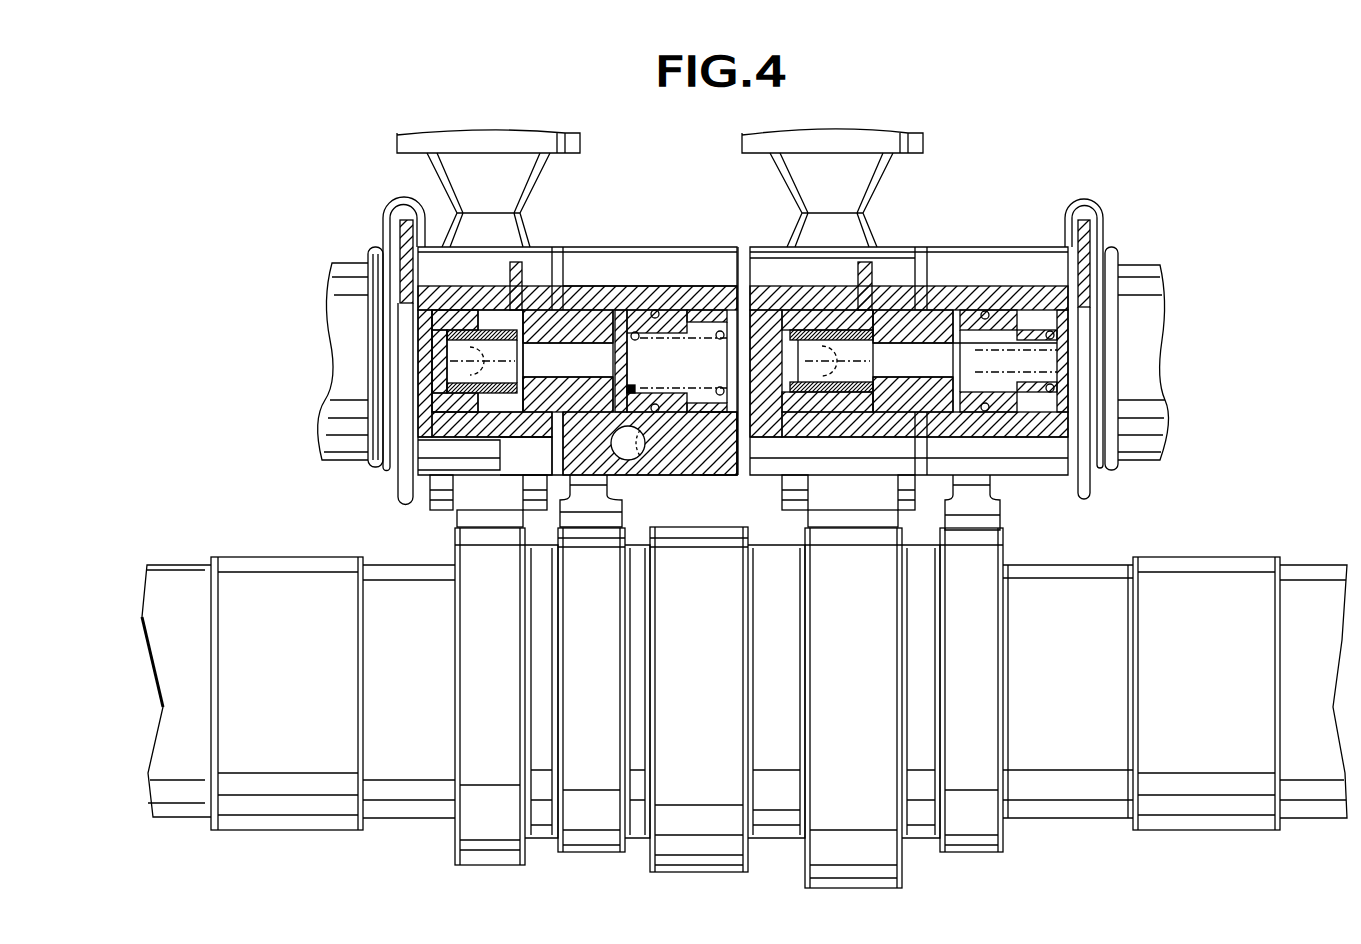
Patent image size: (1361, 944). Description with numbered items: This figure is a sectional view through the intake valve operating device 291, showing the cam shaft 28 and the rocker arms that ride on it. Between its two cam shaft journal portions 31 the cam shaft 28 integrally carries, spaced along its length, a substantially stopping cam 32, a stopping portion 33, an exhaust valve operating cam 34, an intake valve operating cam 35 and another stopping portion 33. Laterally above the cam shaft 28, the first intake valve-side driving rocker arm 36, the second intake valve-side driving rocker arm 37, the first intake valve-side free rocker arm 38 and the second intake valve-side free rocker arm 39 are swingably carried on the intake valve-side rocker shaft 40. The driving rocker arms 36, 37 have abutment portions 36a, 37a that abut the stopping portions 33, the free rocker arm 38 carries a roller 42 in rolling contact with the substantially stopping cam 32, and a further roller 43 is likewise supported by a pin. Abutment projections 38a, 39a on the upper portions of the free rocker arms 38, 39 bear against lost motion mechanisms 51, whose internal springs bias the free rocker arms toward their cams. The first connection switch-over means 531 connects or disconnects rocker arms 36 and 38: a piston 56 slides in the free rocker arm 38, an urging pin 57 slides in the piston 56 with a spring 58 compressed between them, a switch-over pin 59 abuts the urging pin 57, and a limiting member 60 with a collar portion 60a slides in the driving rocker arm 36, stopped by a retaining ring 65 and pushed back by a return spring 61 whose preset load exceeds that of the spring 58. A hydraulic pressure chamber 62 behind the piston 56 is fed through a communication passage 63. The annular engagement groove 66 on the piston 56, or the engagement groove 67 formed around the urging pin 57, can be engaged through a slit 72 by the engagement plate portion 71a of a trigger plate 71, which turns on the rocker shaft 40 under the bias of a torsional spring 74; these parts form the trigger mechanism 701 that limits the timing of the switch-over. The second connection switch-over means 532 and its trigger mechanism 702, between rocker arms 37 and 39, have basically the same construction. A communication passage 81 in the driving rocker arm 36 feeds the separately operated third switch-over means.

The trigger mechanism 701 is at (465, 218).
The trigger mechanism 702 is at (1110, 226).
The lost motion mechanism 51 is at (586, 140).
The abutment projection 38a is at (460, 217).
The abutment projection 39a is at (857, 233).
The slit 72 is at (502, 264).
The first intake valve-side driving rocker arm 36 is at (630, 257).
The second intake valve-side free rocker arm 39 is at (780, 257).
The limiting member 60 is at (600, 320).
The collar portion 60a is at (645, 323).
The intake valve operating device 291 is at (949, 228).
The second intake valve-side driving rocker arm 37 is at (943, 267).
The intake valve-side rocker shaft 40 is at (1143, 287).
The hydraulic pressure chamber 62 is at (397, 253).
The switch-over pin 59 is at (588, 320).
The torsional spring 74 is at (390, 300).
The spring 58 is at (410, 328).
The trigger plate 71 is at (403, 367).
The engagement plate portion 71a is at (612, 340).
The communication passage 63 is at (400, 390).
The piston 56 is at (443, 382).
The annular engagement groove 66 is at (473, 403).
The urging pin 57 is at (452, 440).
The annular engagement groove 67 is at (526, 455).
The communication passage 81 is at (634, 461).
The retaining ring 65 is at (648, 460).
The return spring 61 is at (724, 458).
The abutment portion 37a is at (980, 503).
The cam shaft journal portion 31 is at (268, 578).
The cam shaft 28 is at (1315, 580).
The first intake valve-side free rocker arm 38 is at (483, 462).
The roller 42 is at (500, 515).
The first connection switch-over means 531 is at (581, 430).
The second connection switch-over means 532 is at (937, 424).
The abutment portion 36a is at (603, 505).
The roller 43 is at (850, 513).
The substantially stopping cam 32 is at (514, 729).
The stopping portion 33 is at (614, 729).
The exhaust valve operating cam 34 is at (724, 729).
The intake valve operating cam 35 is at (873, 729).